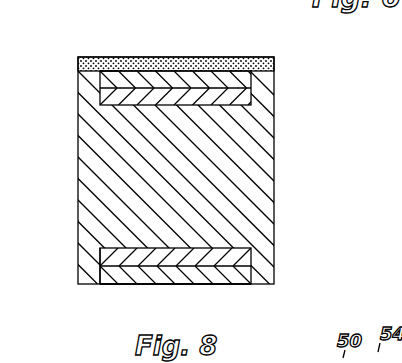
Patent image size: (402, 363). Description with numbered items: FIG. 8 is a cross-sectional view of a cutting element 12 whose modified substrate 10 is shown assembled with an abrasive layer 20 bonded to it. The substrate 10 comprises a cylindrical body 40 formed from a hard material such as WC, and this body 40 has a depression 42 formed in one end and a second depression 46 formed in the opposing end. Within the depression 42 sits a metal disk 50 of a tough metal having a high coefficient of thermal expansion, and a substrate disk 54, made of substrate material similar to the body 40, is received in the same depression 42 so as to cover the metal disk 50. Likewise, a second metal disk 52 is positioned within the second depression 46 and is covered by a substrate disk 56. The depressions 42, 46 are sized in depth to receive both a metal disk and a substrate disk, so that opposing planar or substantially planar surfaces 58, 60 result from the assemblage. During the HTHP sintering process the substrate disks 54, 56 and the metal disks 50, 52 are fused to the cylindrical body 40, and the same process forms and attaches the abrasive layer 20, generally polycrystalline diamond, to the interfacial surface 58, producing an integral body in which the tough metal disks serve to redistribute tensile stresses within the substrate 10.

The substrate 10 is at (0, 308).
The cutting element 12 is at (283, 66).
The abrasive layer 20 is at (214, 57).
The body 40 is at (245, 191).
The depression 42 is at (208, 52).
The second depression 46 is at (98, 265).
The metal disk 50 is at (128, 97).
The second metal disk 52 is at (237, 255).
The substrate disk 54 is at (163, 81).
The substrate disk 56 is at (237, 275).
The interfacial surface 58 is at (105, 57).
The planar surface 60 is at (213, 284).